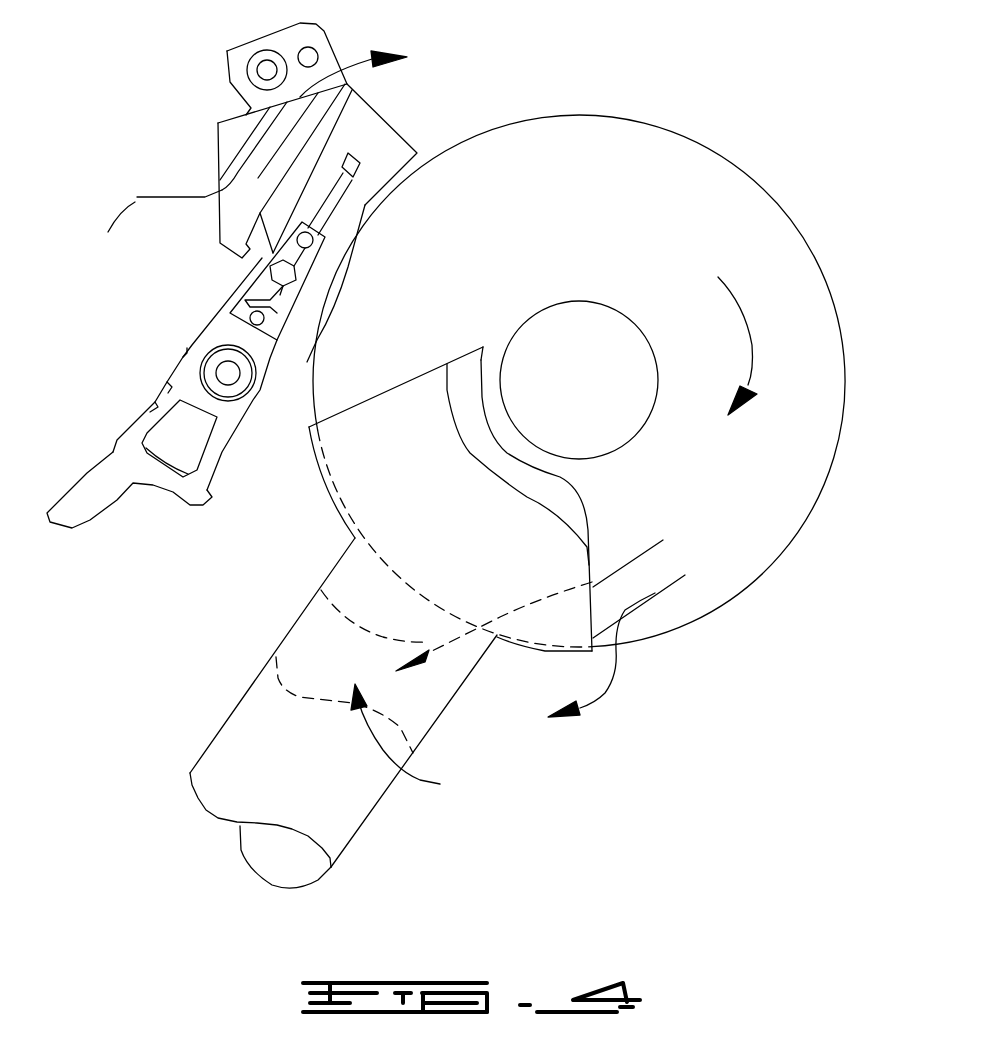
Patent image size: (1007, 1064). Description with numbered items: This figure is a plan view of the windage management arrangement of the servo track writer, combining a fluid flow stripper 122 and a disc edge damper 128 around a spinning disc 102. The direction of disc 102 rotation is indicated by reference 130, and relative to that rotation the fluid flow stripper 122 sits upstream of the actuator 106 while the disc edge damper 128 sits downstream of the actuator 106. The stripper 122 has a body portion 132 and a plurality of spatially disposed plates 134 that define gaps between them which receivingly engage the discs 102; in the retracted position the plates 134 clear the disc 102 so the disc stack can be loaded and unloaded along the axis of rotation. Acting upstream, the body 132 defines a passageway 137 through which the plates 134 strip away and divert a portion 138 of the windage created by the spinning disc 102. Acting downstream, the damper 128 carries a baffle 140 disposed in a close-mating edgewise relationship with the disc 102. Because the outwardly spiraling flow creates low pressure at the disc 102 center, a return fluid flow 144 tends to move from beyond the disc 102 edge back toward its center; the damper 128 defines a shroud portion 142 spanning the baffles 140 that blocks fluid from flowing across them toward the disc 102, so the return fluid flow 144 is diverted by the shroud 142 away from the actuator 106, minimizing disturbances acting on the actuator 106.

The disc 102 is at (704, 195).
The actuator 106 is at (232, 372).
The fluid flow stripper 122 is at (367, 492).
The disc edge damper 128 is at (347, 125).
The direction of disc rotation 130 is at (750, 324).
The body portion 132 is at (208, 745).
The plates 134 is at (482, 355).
The passageway 137 is at (413, 741).
The portion of the windage 138 is at (635, 560).
The baffle 140 is at (420, 150).
The shroud portion 142 is at (245, 207).
The return fluid flow 144 is at (133, 197).